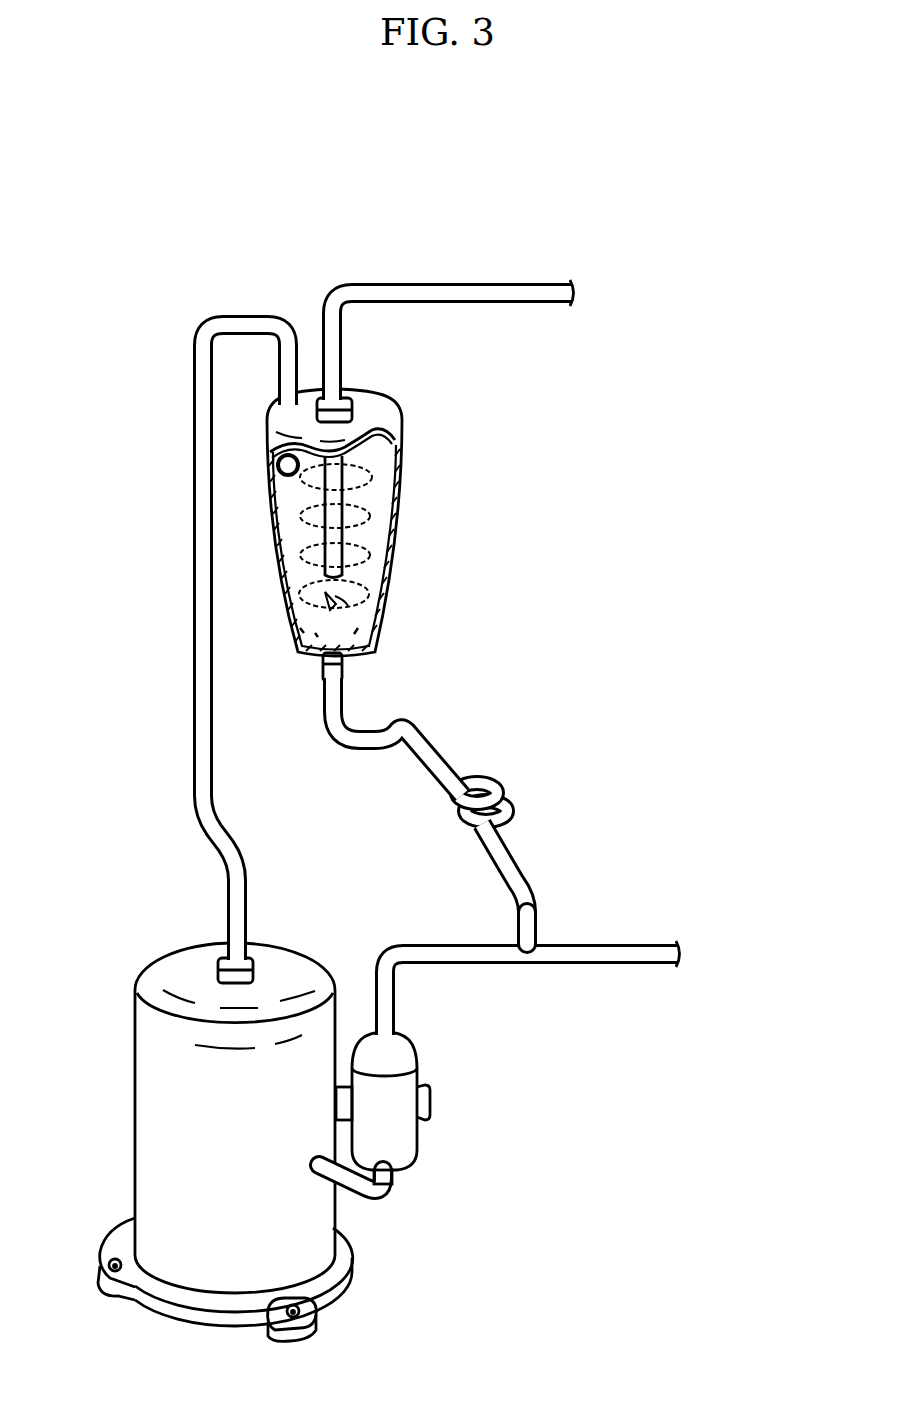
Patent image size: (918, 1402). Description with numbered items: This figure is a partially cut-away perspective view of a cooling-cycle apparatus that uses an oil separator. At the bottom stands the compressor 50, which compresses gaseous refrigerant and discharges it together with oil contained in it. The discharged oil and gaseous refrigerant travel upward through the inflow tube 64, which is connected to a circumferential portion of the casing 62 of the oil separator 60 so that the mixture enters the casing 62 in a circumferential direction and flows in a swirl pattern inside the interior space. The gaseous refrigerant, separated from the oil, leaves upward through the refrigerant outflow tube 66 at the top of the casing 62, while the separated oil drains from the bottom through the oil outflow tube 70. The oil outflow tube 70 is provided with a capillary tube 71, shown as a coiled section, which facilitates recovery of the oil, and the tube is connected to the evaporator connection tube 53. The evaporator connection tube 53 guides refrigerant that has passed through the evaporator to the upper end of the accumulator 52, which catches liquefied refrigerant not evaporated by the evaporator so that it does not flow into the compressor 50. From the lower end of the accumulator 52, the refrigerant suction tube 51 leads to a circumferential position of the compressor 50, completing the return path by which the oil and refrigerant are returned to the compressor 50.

The compressor 50 is at (312, 1256).
The refrigerant suction tube 51 is at (382, 1183).
The accumulator 52 is at (405, 1120).
The evaporator connection tube 53 is at (627, 953).
The oil separator 60 is at (425, 512).
The casing 62 is at (402, 505).
The inflow tube 64 is at (232, 325).
The refrigerant outflow tube 66 is at (453, 297).
The oil outflow tube 70 is at (333, 714).
The capillary tube 71 is at (490, 782).